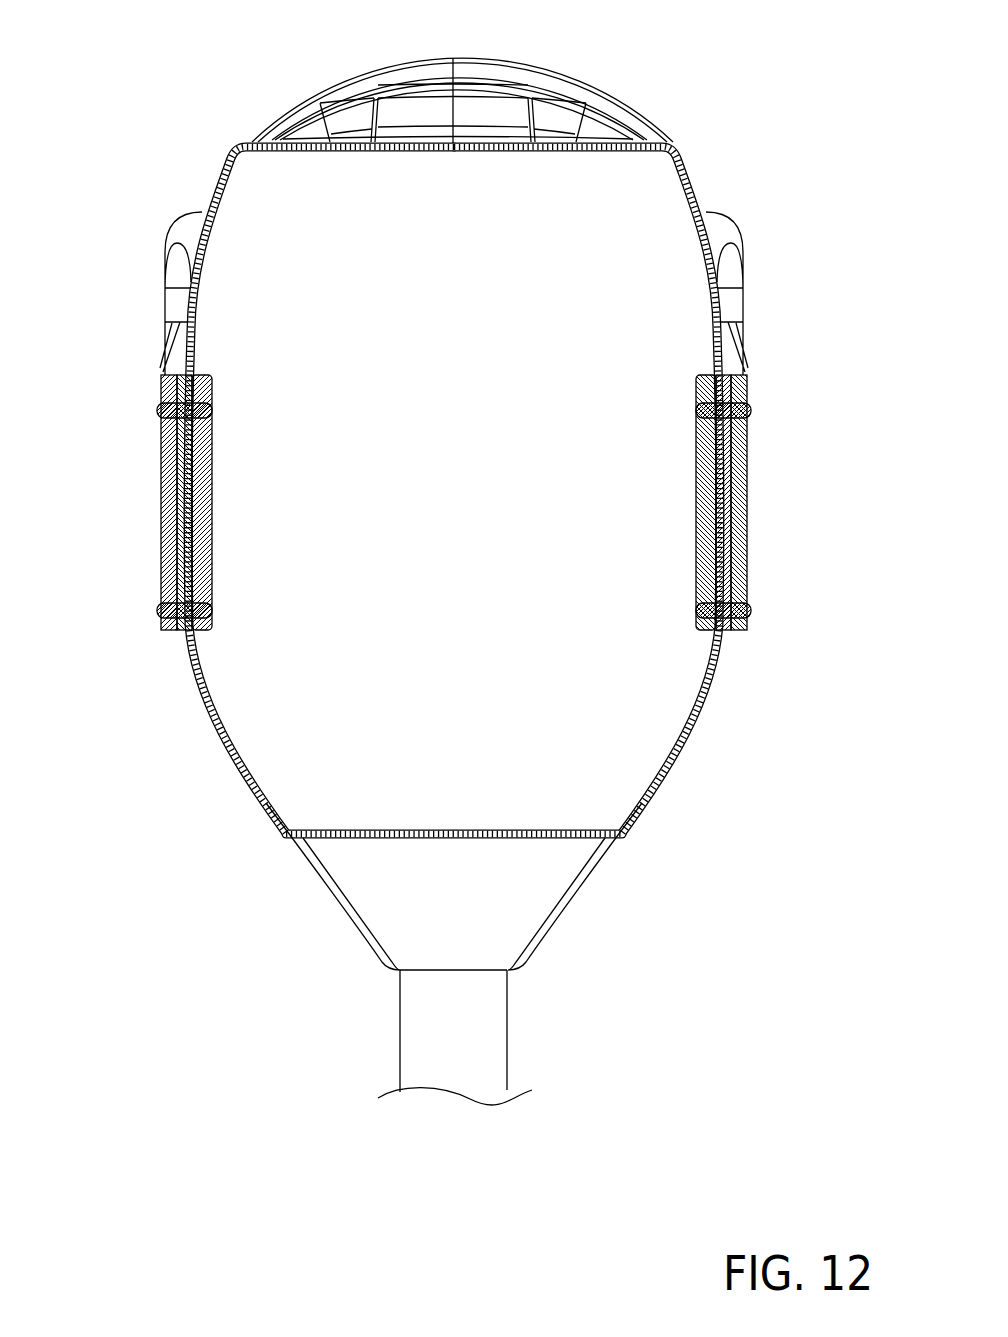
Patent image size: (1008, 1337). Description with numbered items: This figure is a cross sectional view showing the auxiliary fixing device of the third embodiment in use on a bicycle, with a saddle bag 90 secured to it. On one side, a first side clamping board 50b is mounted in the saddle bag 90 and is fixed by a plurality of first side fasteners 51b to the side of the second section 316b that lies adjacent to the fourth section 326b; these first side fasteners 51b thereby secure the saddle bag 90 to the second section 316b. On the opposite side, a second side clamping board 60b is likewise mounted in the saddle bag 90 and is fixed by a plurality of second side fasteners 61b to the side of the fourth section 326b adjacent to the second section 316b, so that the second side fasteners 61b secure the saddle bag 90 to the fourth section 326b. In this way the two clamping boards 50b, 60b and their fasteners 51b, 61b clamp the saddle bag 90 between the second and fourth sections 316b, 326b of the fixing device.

The saddle bag 90 is at (492, 147).
The first side clamping board 50b is at (200, 472).
The first side fasteners 51b is at (157, 410).
The second section 316b is at (165, 518).
The second side clamping board 60b is at (705, 472).
The second side fasteners 61b is at (750, 410).
The fourth section 326b is at (738, 518).